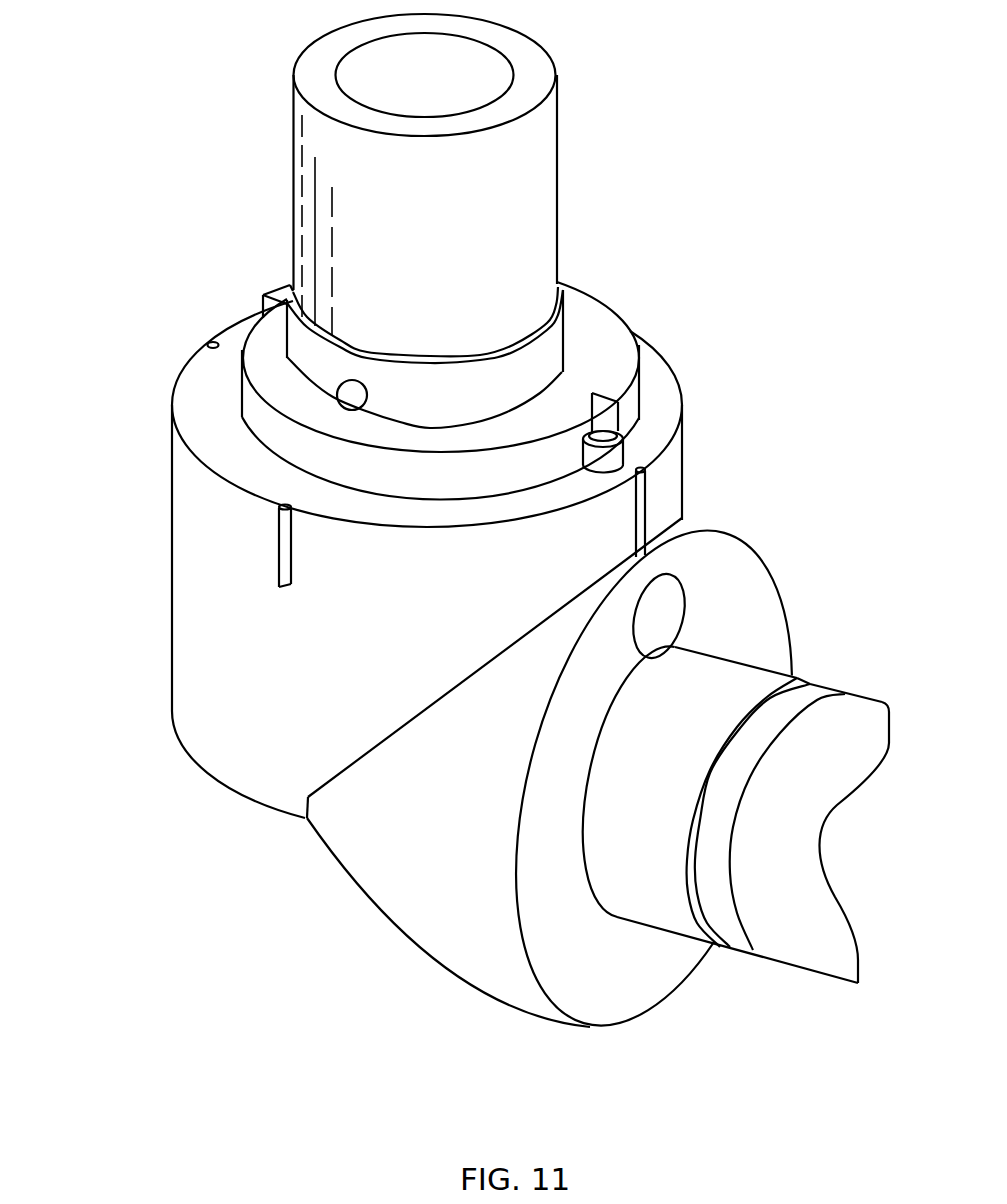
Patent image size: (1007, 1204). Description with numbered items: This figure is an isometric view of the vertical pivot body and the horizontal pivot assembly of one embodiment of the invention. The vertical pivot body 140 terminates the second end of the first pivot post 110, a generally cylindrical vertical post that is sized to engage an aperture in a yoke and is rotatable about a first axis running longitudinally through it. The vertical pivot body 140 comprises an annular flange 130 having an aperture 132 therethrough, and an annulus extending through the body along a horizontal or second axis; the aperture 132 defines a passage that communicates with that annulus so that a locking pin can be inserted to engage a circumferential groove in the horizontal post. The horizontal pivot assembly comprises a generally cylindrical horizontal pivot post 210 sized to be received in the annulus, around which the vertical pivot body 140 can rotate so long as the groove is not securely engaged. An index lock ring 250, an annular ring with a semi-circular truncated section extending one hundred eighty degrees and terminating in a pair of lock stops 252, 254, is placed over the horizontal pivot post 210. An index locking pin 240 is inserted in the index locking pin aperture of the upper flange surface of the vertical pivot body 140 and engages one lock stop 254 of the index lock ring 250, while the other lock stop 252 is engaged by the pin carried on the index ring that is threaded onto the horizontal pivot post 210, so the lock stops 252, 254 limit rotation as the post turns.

The first pivot post 110 is at (668, 910).
The annular flange 130 is at (780, 625).
The aperture 132 is at (667, 610).
The vertical pivot body 140 is at (200, 625).
The horizontal pivot post 210 is at (552, 195).
The index locking pin 240 is at (618, 458).
The index lock ring 250 is at (600, 320).
The lock stop 252 is at (263, 306).
The lock stop 254 is at (605, 413).